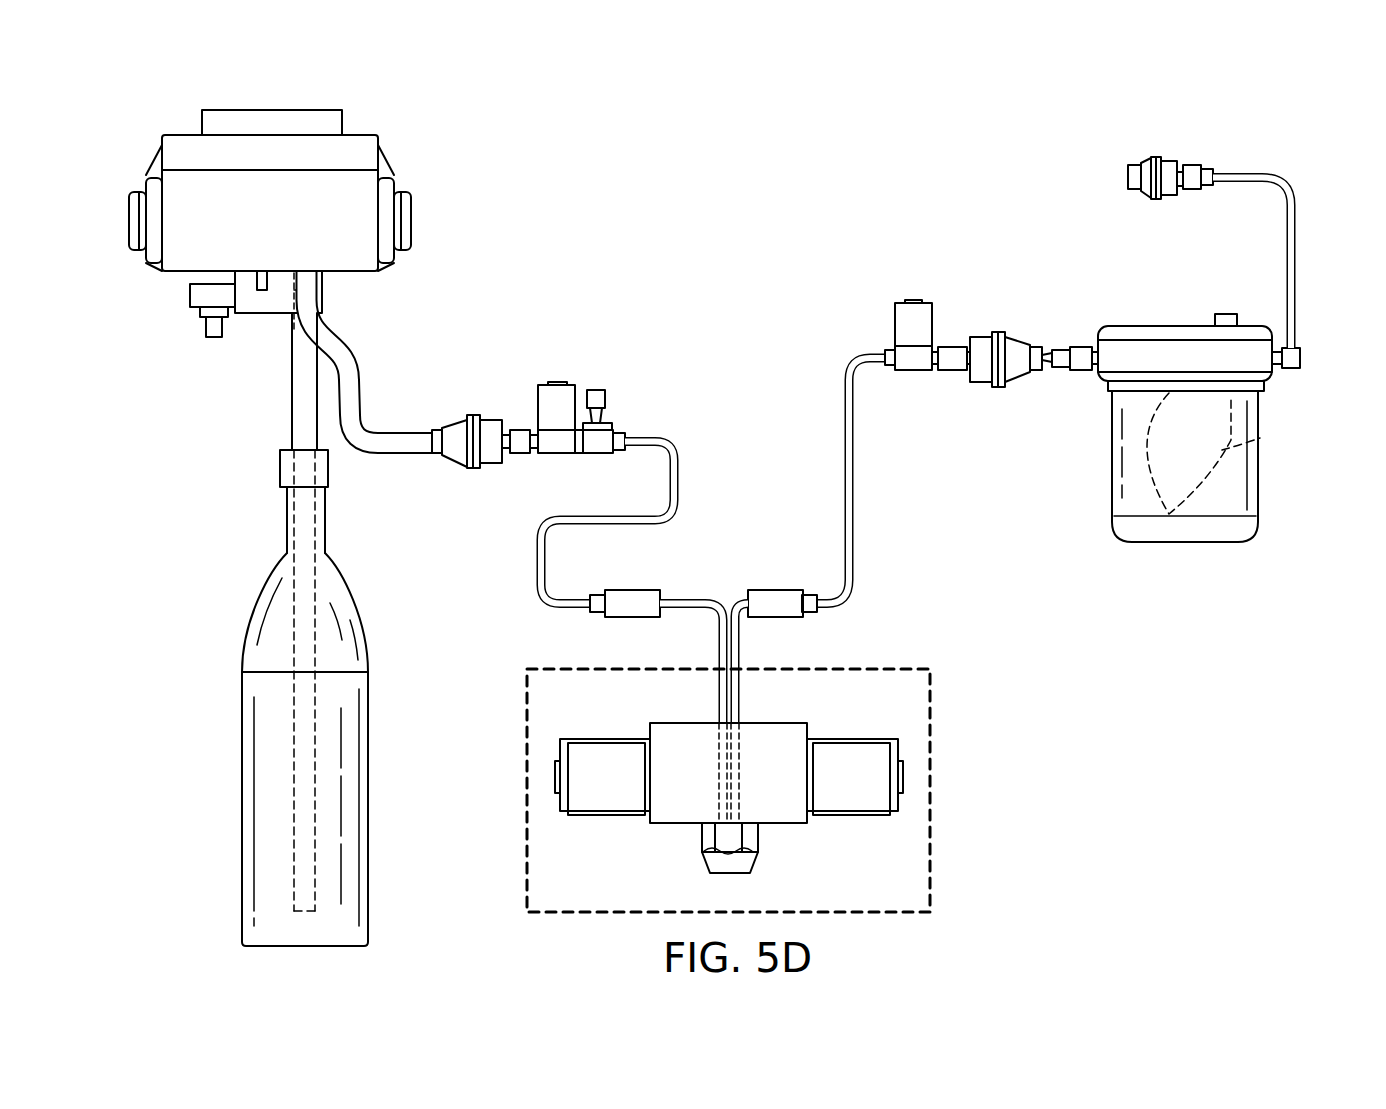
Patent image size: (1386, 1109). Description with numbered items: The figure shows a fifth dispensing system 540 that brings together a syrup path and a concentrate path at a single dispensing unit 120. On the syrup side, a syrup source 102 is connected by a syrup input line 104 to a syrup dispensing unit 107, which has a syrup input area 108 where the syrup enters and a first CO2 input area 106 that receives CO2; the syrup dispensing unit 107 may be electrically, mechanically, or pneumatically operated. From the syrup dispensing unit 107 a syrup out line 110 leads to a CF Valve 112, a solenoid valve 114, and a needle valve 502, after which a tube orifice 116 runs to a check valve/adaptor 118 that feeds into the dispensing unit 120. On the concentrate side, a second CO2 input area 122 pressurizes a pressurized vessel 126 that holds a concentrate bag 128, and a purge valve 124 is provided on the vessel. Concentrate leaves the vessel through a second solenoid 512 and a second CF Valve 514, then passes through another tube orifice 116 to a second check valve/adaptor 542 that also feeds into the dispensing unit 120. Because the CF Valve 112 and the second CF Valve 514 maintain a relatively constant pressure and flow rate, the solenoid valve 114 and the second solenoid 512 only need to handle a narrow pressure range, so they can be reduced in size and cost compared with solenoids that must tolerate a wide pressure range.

The syrup source 102 is at (242, 813).
The syrup input line 104 is at (292, 427).
The first CO2 input area 106 is at (203, 333).
The syrup dispensing unit 107 is at (182, 134).
The syrup input area 108 is at (292, 345).
The syrup out line 110 is at (362, 424).
The CF Valve 112 is at (470, 415).
The solenoid valve 114 is at (555, 382).
The tube orifice 116 is at (678, 477).
The check valve/adaptor 118 is at (630, 590).
The dispensing unit 120 is at (931, 705).
The second CO2 input area 122 is at (1150, 157).
The purge valve 124 is at (1303, 357).
The pressurized vessel 126 is at (1232, 545).
The concentrate bag 128 is at (1260, 438).
The needle valve 502 is at (607, 398).
The second solenoid valve 512 is at (918, 300).
The second CF Valve 514 is at (1000, 332).
The fifth dispensing system 540 is at (635, 150).
The second check valve/adaptor 542 is at (775, 590).